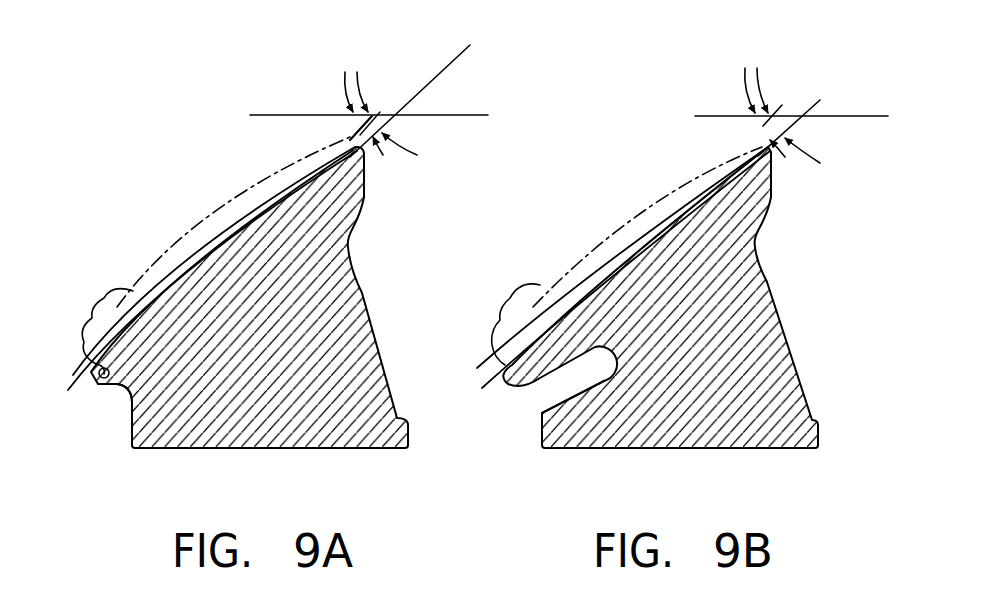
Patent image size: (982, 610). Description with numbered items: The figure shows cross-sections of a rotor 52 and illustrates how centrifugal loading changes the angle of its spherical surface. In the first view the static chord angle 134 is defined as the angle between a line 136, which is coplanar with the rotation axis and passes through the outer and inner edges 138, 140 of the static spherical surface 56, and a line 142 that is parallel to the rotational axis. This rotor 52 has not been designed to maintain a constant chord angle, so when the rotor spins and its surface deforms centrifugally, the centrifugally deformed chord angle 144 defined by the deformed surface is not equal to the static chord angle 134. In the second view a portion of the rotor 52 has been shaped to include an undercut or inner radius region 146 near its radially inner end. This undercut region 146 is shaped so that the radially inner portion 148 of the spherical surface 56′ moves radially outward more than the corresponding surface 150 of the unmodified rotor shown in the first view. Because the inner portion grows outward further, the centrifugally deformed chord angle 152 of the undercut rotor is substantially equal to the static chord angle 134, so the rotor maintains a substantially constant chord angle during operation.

In FIG. 9A, the rotor 52 is at (353, 313).
In FIG. 9B, the rotor 52 is at (753, 287).
In FIG. 9A, the static spherical surface 56 is at (183, 263).
In FIG. 9B, the spherical surface 56′ is at (672, 181).
In FIG. 9A, the static chord angle 134 is at (384, 115).
In FIG. 9B, the static chord angle 134 is at (786, 117).
In FIG. 9A, the line 136 is at (437, 73).
In FIG. 9A, the outer edge 138 is at (364, 168).
In FIG. 9A, the inner edge 140 is at (96, 385).
In FIG. 9A, the line parallel to the rotational axis 142 is at (308, 113).
In FIG. 9B, the line parallel to the rotational axis 142 is at (838, 116).
In FIG. 9A, the centrifugally deformed chord angle 144 is at (357, 121).
In FIG. 9B, the undercut or inner radius region 146 is at (538, 380).
In FIG. 9B, the radially inner portion 148 is at (497, 324).
In FIG. 9A, the corresponding surface 150 is at (88, 332).
In FIG. 9B, the centrifugally deformed chord angle 152 is at (760, 127).